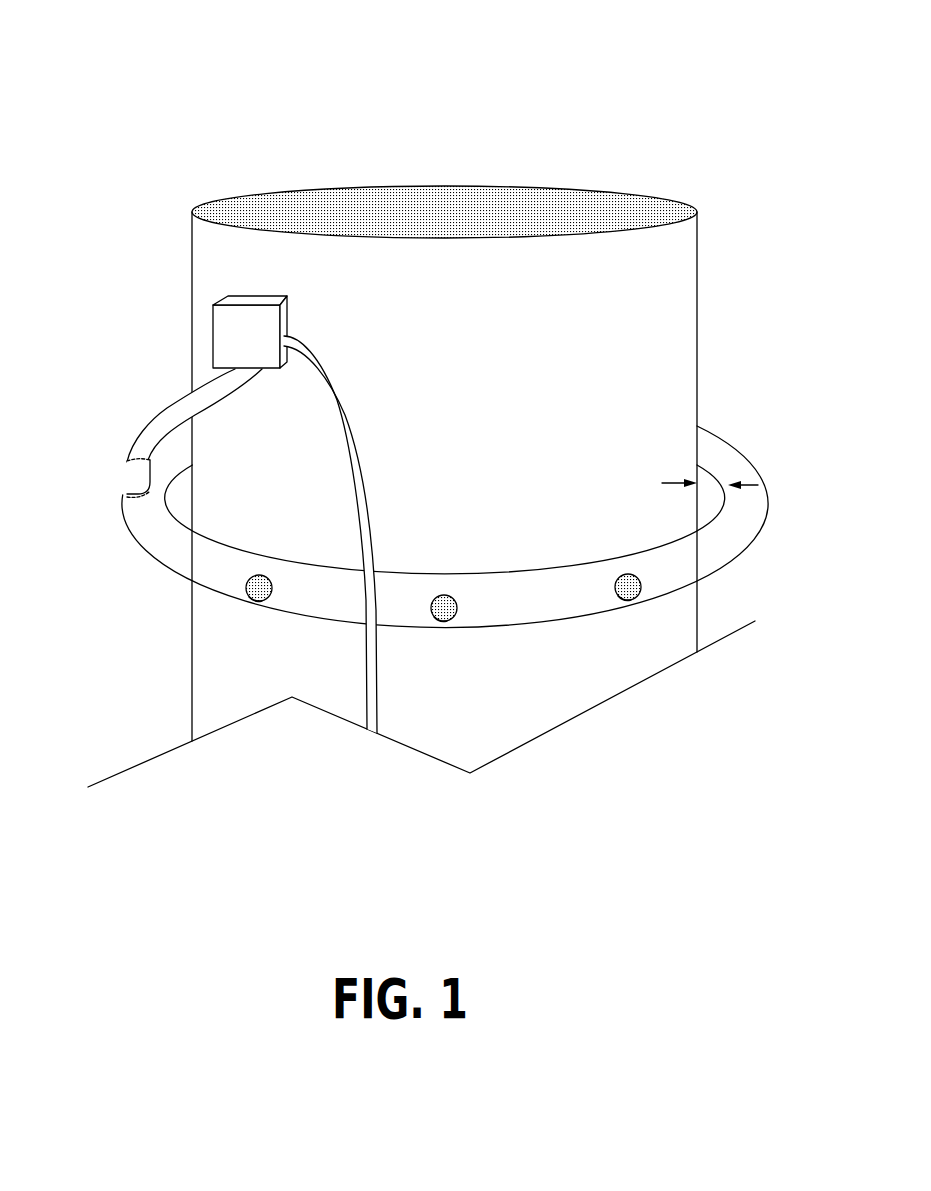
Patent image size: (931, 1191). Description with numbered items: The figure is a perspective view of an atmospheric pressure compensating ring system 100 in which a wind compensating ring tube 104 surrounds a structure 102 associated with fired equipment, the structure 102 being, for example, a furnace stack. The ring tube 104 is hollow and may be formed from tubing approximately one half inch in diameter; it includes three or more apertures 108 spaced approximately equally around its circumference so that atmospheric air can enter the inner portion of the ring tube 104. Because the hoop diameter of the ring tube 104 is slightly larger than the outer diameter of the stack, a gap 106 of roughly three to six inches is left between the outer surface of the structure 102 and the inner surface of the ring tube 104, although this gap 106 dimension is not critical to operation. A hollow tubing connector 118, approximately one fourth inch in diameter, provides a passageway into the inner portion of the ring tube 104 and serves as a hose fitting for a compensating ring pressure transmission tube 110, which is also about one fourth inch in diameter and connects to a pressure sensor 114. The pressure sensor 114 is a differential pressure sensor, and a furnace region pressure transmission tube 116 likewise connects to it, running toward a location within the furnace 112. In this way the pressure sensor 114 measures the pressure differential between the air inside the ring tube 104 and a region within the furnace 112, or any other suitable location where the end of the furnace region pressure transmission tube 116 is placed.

The atmospheric pressure compensating ring system 100 is at (408, 78).
The structure 102 is at (698, 270).
The wind compensating ring tube 104 is at (563, 582).
The gap 106 is at (681, 481).
The apertures 108 is at (453, 620).
The compensating ring pressure transmission tube 110 is at (167, 408).
The furnace 112 is at (350, 770).
The pressure sensor 114 is at (267, 322).
The furnace region pressure transmission tube 116 is at (345, 437).
The hollow tubing connector 118 is at (133, 485).